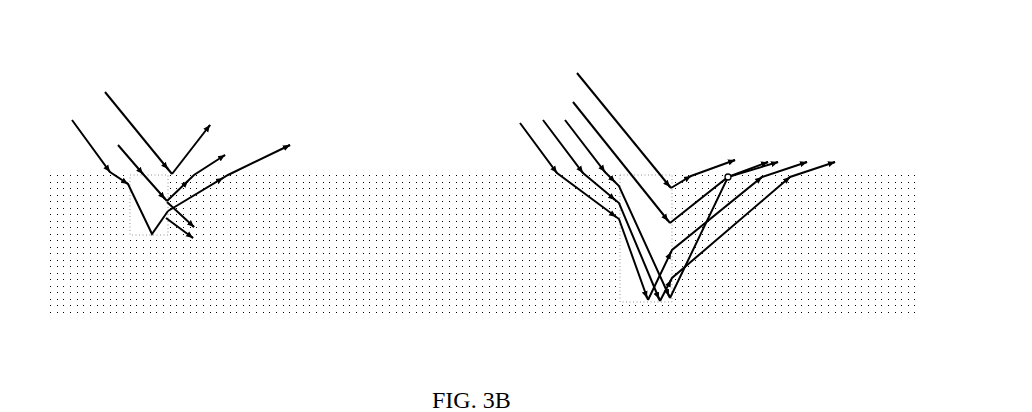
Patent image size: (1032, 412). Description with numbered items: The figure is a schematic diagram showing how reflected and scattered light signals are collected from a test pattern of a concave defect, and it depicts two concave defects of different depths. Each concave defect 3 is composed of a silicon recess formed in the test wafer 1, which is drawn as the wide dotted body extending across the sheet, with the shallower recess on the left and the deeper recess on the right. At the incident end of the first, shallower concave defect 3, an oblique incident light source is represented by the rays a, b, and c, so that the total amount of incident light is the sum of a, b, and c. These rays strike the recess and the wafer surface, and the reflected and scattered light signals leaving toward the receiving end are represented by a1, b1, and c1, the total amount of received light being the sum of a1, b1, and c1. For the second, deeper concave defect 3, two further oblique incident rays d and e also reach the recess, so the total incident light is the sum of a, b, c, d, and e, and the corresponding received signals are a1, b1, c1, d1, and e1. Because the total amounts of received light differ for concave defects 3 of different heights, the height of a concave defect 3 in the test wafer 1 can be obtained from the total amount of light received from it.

The test wafer 1 is at (350, 197).
The concave defect 3 is at (646, 238).
The oblique incident light a is at (352, 210).
The oblique incident light b is at (376, 196).
The oblique incident light c is at (379, 181).
The oblique incident light d is at (608, 142).
The oblique incident light e is at (623, 112).
The reflected and scattered light signal a1 is at (507, 209).
The reflected and scattered light signal b1 is at (522, 211).
The reflected and scattered light signal c1 is at (475, 191).
The reflected and scattered light signal d1 is at (744, 173).
The reflected and scattered light signal e1 is at (710, 152).